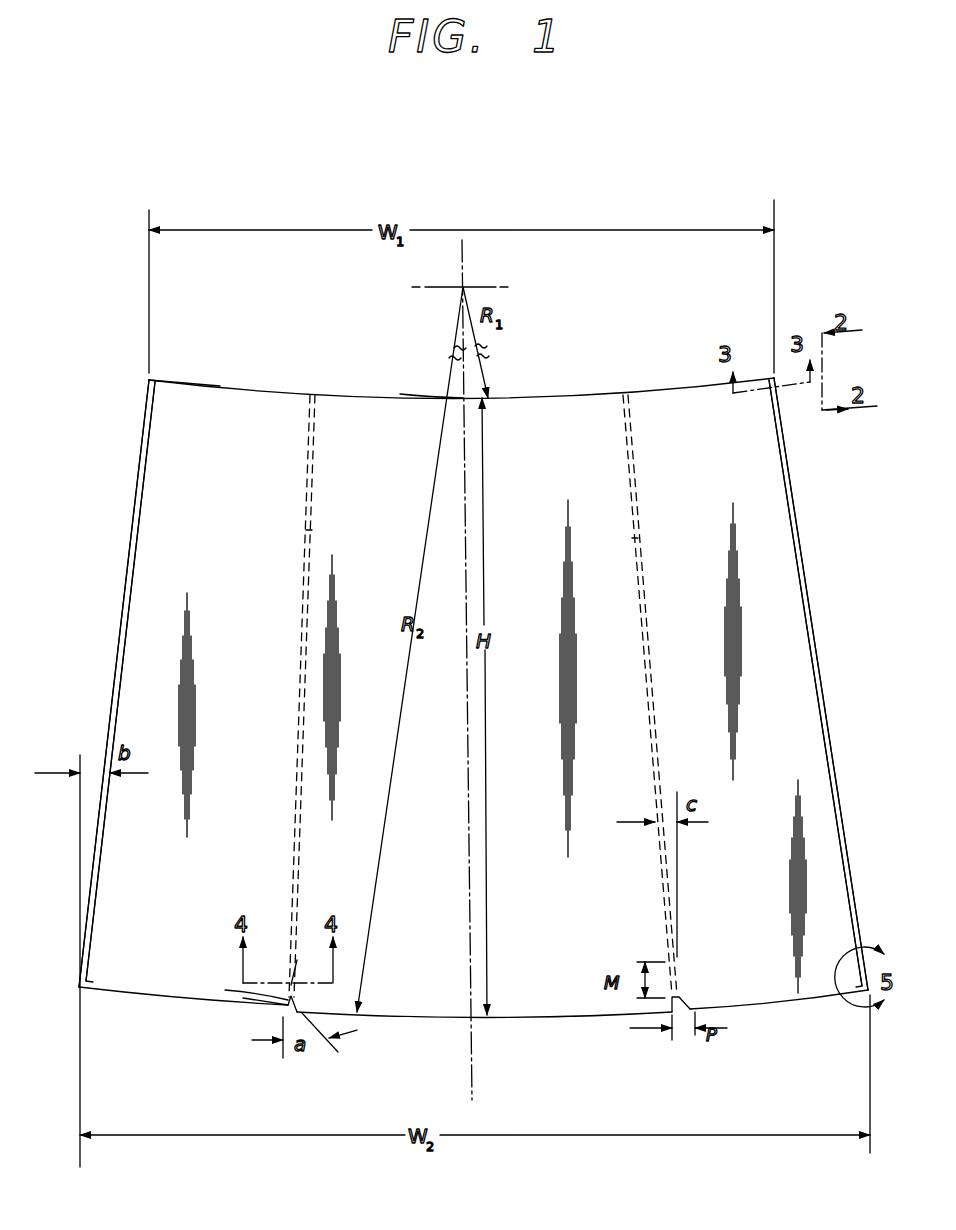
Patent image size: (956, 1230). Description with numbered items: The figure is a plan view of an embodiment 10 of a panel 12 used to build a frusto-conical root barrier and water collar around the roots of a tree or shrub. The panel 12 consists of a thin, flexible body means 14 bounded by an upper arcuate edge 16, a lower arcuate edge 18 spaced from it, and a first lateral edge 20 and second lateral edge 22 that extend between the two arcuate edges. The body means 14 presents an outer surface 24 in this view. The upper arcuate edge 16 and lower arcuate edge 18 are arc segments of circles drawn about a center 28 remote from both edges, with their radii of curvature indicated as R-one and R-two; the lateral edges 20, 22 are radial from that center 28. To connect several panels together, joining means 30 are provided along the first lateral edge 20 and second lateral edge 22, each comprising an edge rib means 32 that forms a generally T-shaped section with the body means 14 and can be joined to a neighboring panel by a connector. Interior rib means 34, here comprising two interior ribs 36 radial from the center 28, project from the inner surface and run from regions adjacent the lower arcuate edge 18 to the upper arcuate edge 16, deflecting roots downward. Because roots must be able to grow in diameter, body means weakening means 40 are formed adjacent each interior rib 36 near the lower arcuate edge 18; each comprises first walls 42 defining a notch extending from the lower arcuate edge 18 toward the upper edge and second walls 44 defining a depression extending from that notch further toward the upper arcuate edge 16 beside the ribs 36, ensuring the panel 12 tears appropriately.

The embodiment 10 is at (690, 153).
The panel 12 is at (190, 378).
The body means 14 is at (256, 387).
The upper arcuate edge 16 is at (408, 394).
The lower arcuate edge 18 is at (590, 1020).
The first lateral edge 20 is at (798, 502).
The second lateral edge 22 is at (134, 498).
The outer surface 24 is at (492, 746).
The center 28 is at (464, 287).
The joining means 30 is at (112, 675).
The edge rib means 32 is at (126, 577).
The interior rib means 34 is at (313, 392).
The interior ribs 36 is at (312, 530).
The body means weakening means 40 is at (290, 1013).
The first walls 42 is at (234, 990).
The second walls 44 is at (297, 960).